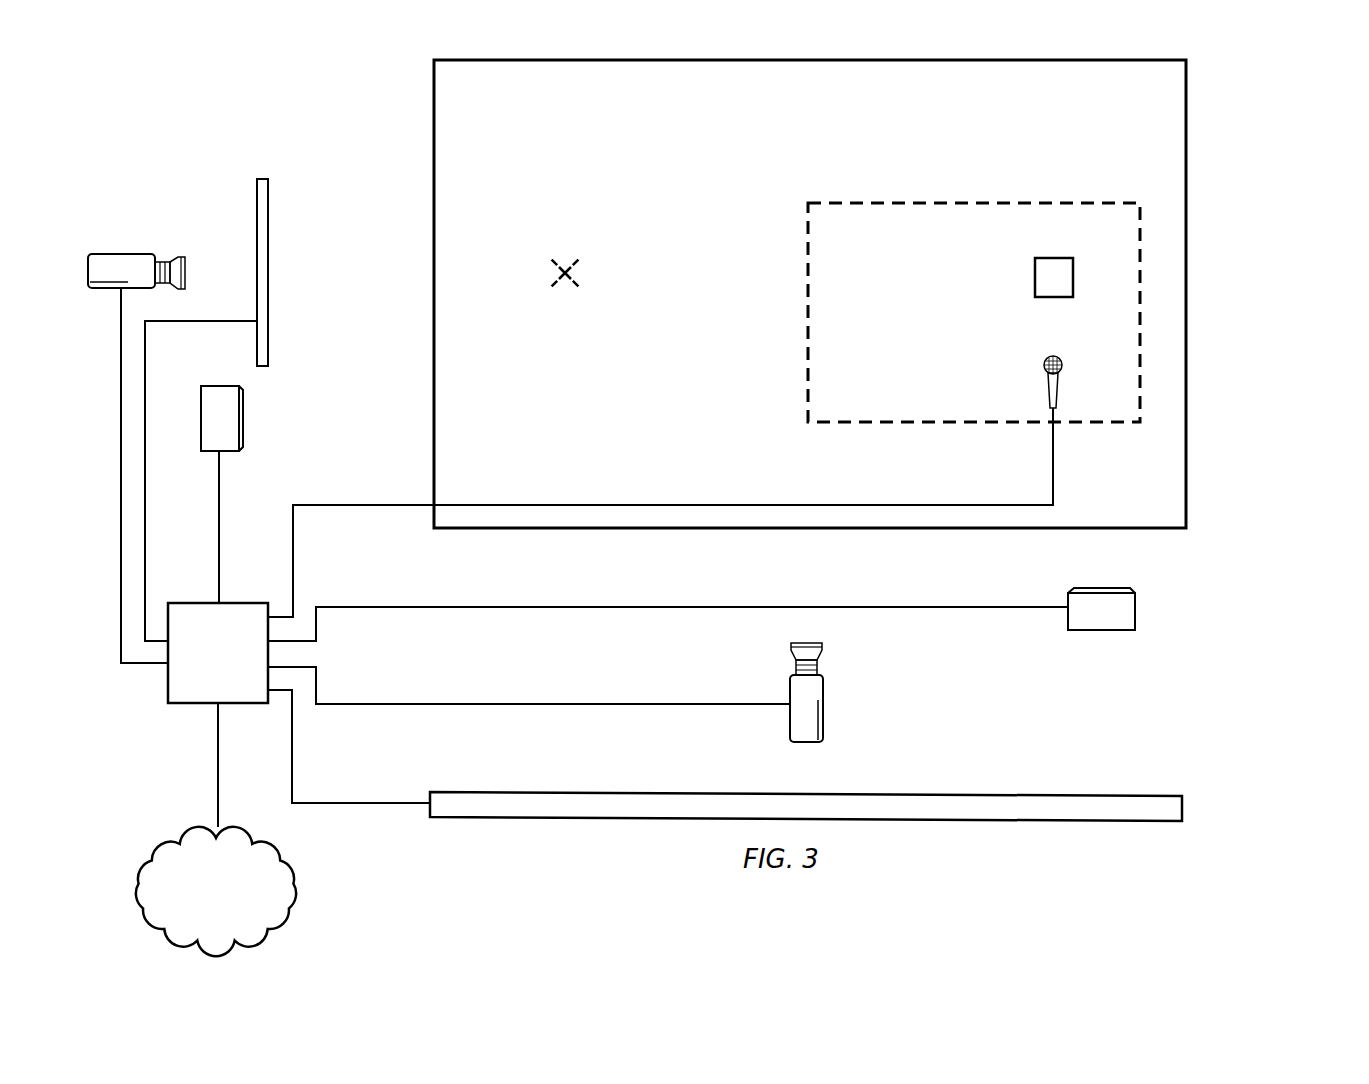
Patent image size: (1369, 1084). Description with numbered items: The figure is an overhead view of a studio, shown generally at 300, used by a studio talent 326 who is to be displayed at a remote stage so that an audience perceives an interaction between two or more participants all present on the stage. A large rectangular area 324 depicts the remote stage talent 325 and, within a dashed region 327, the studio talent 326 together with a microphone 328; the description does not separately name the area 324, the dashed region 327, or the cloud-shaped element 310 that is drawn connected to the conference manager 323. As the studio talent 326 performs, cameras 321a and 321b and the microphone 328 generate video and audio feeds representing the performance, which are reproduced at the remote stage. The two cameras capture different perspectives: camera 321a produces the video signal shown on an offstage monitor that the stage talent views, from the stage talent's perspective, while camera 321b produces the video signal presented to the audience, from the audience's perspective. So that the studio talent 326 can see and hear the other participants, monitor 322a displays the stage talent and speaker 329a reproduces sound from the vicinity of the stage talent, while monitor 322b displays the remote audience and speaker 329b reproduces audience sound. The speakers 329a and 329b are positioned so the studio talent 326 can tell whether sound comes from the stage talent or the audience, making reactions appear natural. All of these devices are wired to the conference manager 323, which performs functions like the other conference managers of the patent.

The system 300 is at (1283, 226).
The network 310 is at (128, 890).
The camera 321a is at (100, 253).
The camera 321b is at (823, 718).
The monitor 322a is at (261, 178).
The monitor 322b is at (1183, 810).
The conference manager 323 is at (167, 683).
The display screen 324 is at (1187, 125).
The remote stage talent 325 is at (553, 263).
The studio talent 326 is at (1035, 272).
The region 327 is at (1068, 202).
The microphone 328 is at (1043, 362).
The speaker 329a is at (243, 410).
The speaker 329b is at (1135, 622).